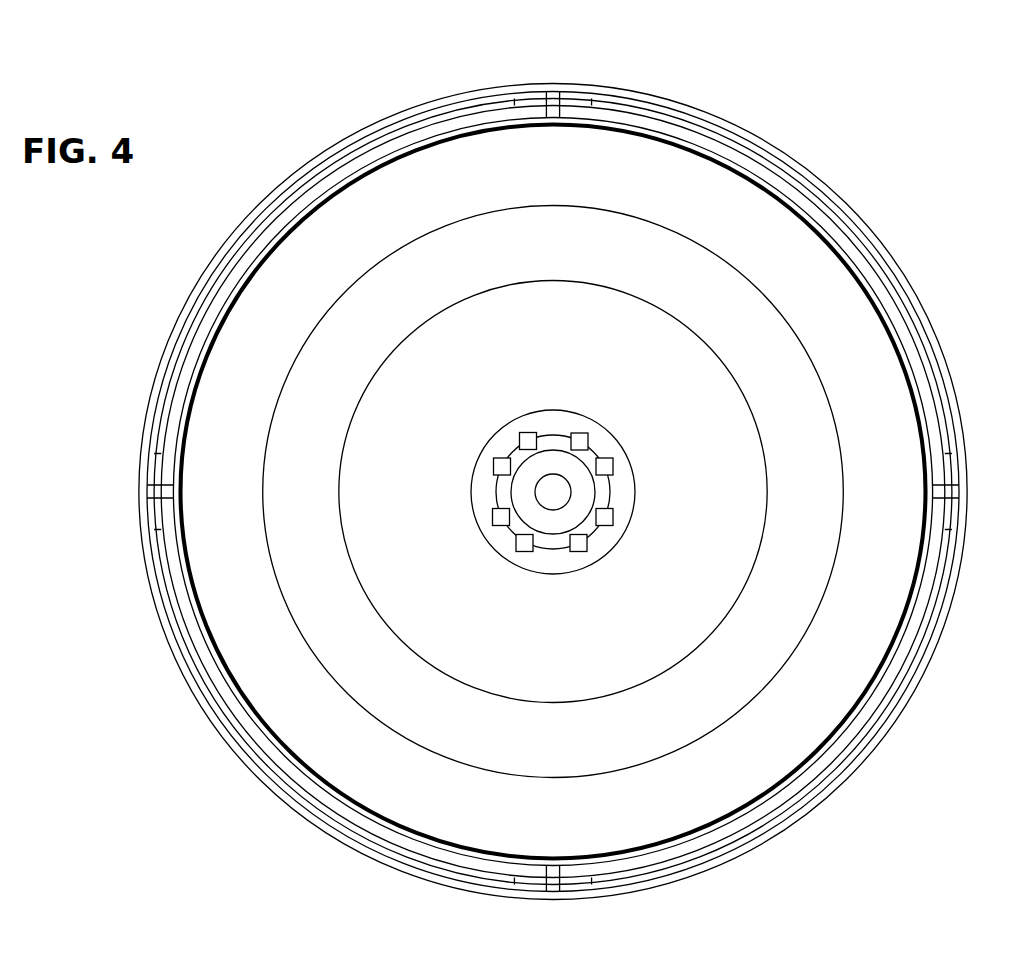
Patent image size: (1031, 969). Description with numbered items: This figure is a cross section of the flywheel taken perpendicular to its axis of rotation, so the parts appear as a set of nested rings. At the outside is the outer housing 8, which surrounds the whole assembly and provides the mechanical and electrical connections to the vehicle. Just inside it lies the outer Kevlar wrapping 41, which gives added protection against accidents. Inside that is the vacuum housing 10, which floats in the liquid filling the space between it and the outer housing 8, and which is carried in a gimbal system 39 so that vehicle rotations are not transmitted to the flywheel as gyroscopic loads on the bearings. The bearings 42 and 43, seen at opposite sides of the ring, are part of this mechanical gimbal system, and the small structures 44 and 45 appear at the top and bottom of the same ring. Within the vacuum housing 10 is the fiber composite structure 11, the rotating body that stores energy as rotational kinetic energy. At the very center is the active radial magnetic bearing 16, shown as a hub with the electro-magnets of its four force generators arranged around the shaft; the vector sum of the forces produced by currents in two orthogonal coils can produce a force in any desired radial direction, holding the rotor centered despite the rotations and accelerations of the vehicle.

The outer housing 8 is at (880, 292).
The vacuum housing 10 is at (305, 210).
The fiber composite structure 11 is at (772, 657).
The active radial magnetic bearing 16 is at (551, 563).
The gimbal system 39 is at (906, 638).
The outer Kevlar wrapping 41 is at (208, 292).
The bearing 42 is at (940, 508).
The bearing 43 is at (168, 504).
The spacer post 44 is at (566, 121).
The spacer post 45 is at (562, 882).